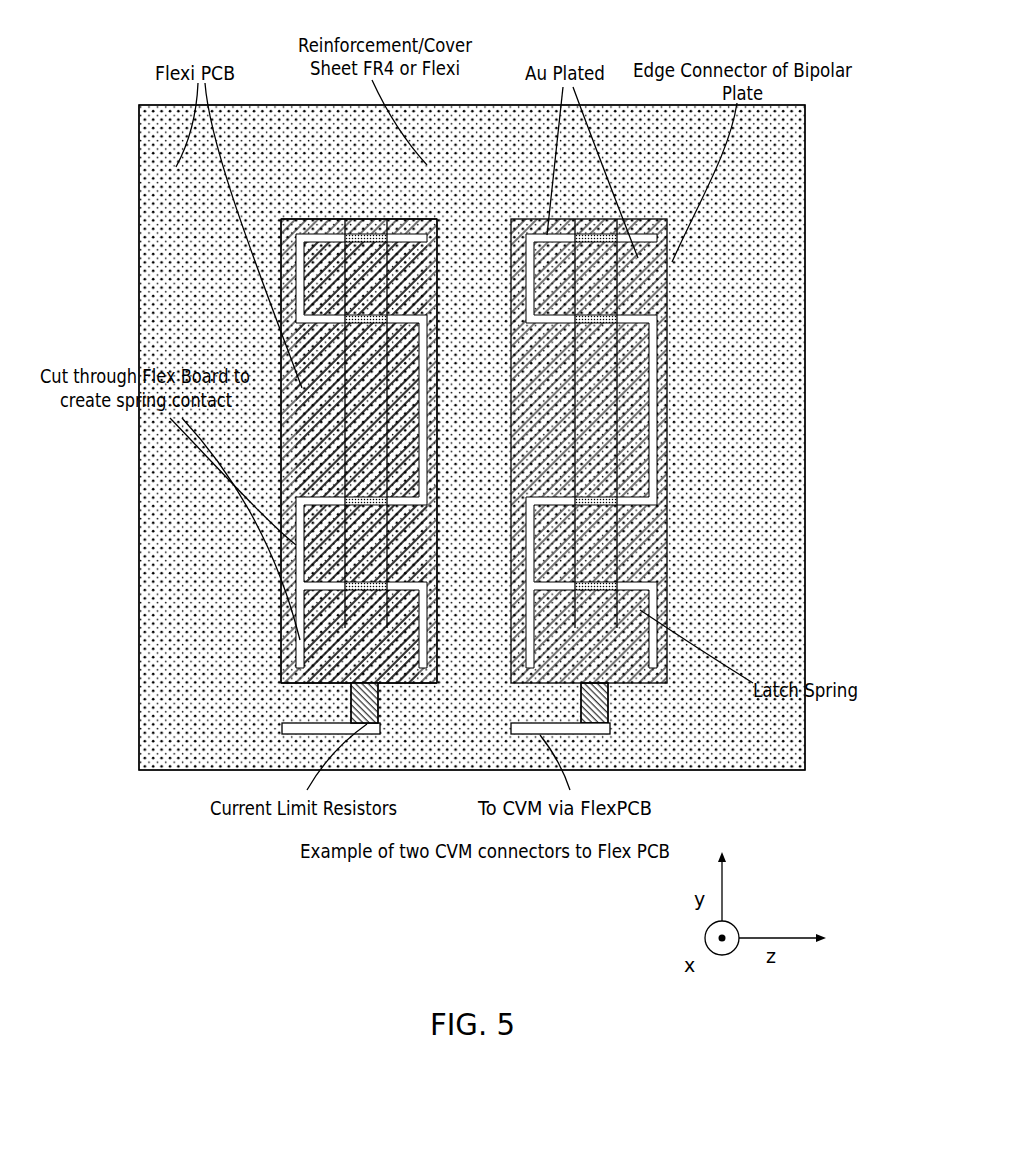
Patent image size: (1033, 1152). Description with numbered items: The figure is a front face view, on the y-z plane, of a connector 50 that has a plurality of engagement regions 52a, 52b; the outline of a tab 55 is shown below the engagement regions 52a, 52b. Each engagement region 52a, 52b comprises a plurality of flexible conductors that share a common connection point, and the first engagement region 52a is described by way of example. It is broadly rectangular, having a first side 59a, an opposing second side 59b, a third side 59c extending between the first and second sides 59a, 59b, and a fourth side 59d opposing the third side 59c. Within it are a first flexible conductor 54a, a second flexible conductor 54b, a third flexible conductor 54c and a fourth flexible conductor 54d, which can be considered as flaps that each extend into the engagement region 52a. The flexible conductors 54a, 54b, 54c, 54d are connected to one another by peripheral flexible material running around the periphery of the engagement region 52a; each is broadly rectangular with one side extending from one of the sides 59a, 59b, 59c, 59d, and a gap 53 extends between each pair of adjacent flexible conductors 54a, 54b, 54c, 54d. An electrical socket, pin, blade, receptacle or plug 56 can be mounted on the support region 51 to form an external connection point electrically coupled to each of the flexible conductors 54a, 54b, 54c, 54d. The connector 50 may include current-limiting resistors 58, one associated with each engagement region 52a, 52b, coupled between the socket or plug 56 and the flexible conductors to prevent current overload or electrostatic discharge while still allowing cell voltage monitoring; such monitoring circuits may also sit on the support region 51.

The connector 50 is at (469, 417).
The support region 51 is at (180, 748).
The first engagement region 52a is at (341, 417).
The second engagement region 52b is at (687, 438).
The gap 53 is at (360, 370).
The first flexible conductor 54a is at (312, 275).
The second flexible conductor 54b is at (317, 482).
The third flexible conductor 54c is at (323, 548).
The fourth flexible conductor 54d is at (323, 637).
The tab 55 is at (420, 447).
The electrical socket, pin, blade, receptacle or plug 56 is at (613, 728).
The current-limiting resistor 58 is at (352, 710).
The first side 59a is at (447, 300).
The second side 59b is at (296, 590).
The third side 59c is at (393, 683).
The fourth side 59d is at (316, 219).